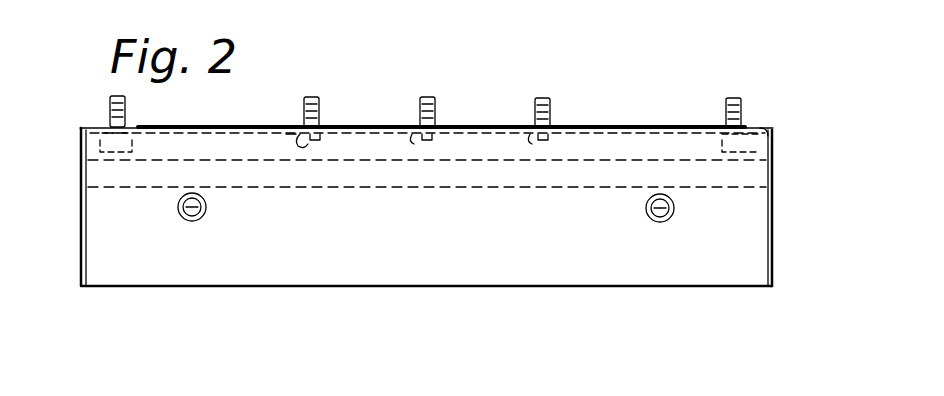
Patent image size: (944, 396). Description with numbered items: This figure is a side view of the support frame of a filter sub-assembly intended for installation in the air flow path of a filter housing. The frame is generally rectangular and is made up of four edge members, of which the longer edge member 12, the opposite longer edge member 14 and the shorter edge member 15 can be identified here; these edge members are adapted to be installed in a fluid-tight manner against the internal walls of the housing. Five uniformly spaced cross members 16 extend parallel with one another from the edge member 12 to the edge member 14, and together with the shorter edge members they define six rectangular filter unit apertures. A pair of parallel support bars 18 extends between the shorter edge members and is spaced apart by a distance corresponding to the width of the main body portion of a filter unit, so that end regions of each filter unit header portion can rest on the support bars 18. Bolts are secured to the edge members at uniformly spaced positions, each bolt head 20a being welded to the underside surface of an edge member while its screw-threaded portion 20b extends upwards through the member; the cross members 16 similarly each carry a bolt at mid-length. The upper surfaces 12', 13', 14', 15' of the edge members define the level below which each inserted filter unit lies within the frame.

The edge member 12 is at (799, 207).
The upper surface of edge member 12' is at (769, 114).
The upper surface of edge member 13' is at (441, 100).
The edge member 14 is at (53, 207).
The upper surface of edge member 14' is at (97, 108).
The edge member 15 is at (426, 207).
The upper surface of edge member 15' is at (441, 99).
The cross member 16 is at (774, 175).
The support bar 18 is at (202, 211).
The bolt head 20a is at (282, 124).
The screw-threaded portion 20b is at (320, 112).